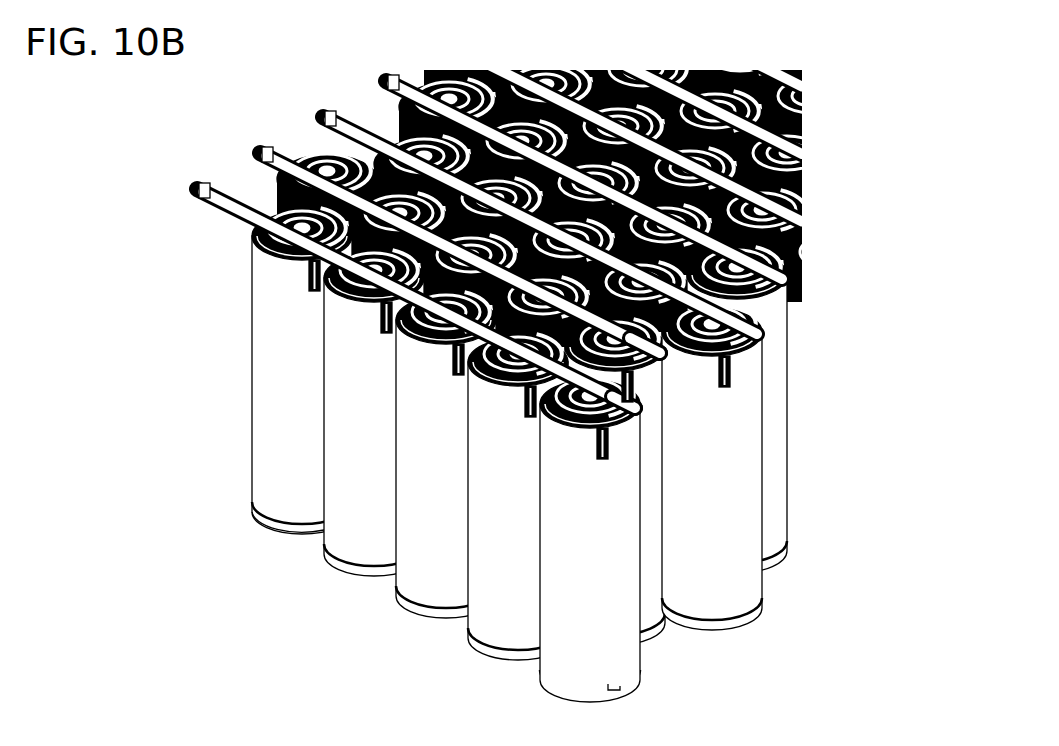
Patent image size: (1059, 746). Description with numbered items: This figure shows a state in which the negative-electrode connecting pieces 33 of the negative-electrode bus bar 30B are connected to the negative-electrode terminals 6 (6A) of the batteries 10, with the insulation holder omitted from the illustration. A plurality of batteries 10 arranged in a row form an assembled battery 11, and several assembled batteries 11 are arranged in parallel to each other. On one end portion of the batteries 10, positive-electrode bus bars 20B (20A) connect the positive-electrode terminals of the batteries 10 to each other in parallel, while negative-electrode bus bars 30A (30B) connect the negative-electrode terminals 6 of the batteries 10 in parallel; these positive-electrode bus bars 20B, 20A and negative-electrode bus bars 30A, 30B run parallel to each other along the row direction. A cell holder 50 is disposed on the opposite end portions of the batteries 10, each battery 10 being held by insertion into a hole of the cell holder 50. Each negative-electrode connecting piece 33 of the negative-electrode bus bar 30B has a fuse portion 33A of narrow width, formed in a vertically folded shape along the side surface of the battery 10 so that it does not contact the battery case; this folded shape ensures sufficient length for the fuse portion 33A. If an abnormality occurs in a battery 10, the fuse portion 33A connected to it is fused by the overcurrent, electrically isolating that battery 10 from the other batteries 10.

The positive-electrode bus bar 20A is at (211, 190).
The positive-electrode bus bar 20B is at (268, 157).
The negative-electrode bus bar 30A is at (776, 312).
The negative-electrode bus bar 30B is at (650, 382).
The battery 10 is at (262, 376).
The cell holder 50 is at (268, 507).
The negative-electrode connecting piece 33 is at (640, 410).
The fuse portion 33A is at (608, 458).
The negative-electrode terminal 6 is at (558, 428).
The negative-electrode terminal 6A is at (559, 477).
The assembled battery 11 is at (616, 588).